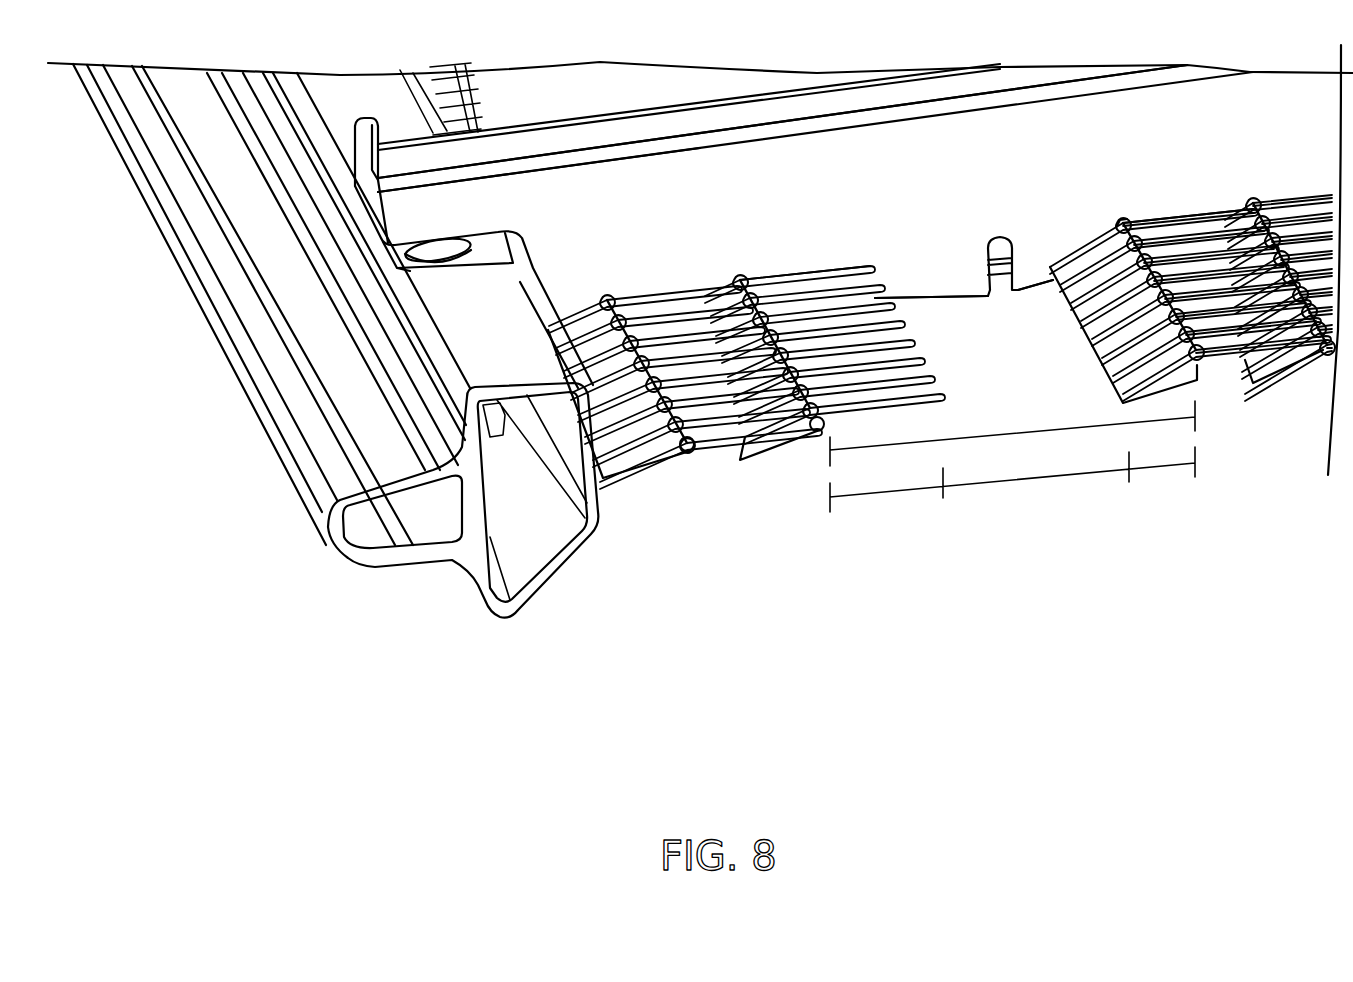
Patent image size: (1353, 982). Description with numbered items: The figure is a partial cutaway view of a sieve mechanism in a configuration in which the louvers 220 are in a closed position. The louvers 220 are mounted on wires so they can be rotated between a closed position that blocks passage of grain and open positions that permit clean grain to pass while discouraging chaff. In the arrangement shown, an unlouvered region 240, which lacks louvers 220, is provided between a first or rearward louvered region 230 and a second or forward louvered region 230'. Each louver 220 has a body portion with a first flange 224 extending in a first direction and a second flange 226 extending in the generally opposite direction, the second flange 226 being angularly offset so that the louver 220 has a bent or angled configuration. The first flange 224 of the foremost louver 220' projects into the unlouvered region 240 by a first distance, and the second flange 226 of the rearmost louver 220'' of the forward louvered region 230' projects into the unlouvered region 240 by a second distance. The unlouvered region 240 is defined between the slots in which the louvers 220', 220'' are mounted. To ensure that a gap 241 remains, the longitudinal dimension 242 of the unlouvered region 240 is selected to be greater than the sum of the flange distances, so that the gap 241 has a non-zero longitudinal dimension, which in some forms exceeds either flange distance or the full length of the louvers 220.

The louvers 220 is at (941, 309).
The foremost louver 220' is at (1184, 276).
The rearmost louver 220'' is at (825, 337).
The first flange 224 is at (1103, 238).
The second flange 226 is at (812, 275).
The louvered region 230 is at (784, 121).
The forward louvered region 230' is at (539, 186).
The unlouvered region 240 is at (963, 185).
The gap 241 is at (920, 235).
The longitudinal dimension of the unlouvered region 242 is at (1012, 461).